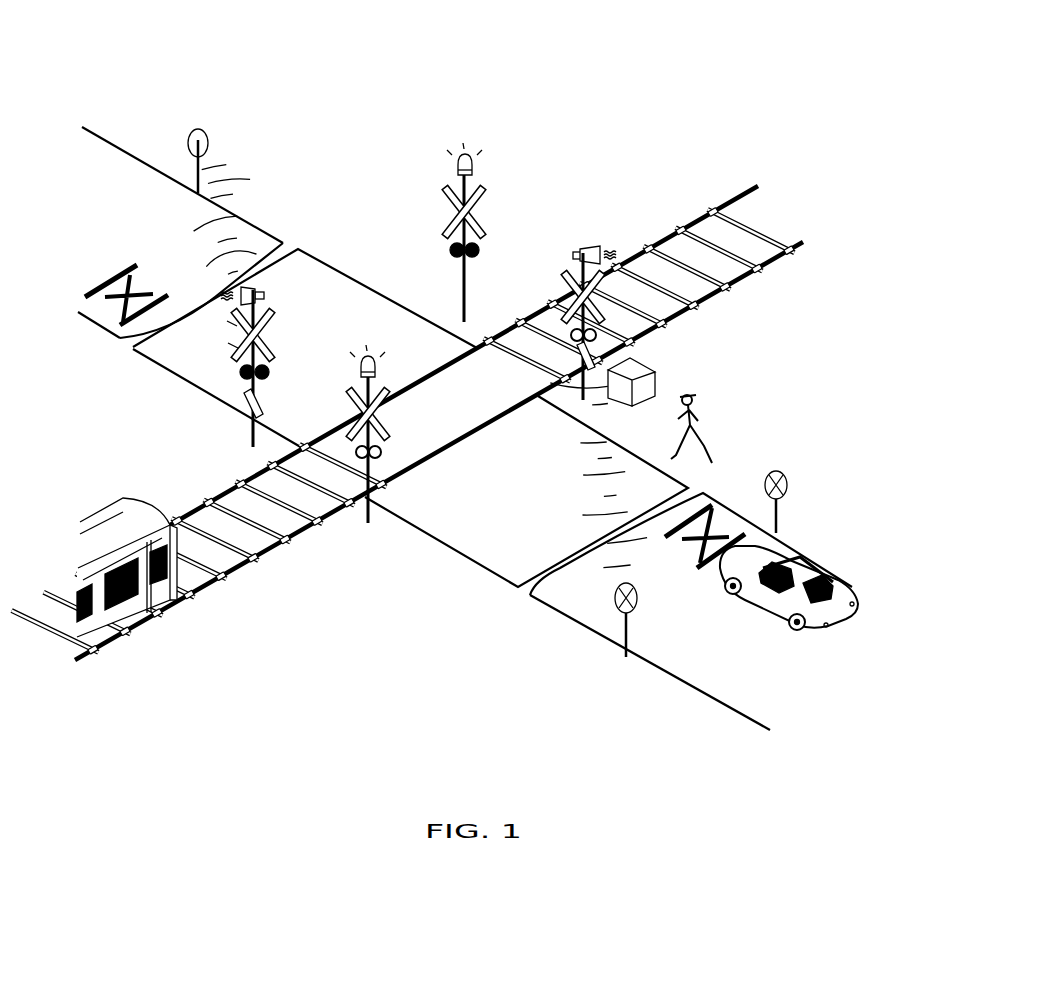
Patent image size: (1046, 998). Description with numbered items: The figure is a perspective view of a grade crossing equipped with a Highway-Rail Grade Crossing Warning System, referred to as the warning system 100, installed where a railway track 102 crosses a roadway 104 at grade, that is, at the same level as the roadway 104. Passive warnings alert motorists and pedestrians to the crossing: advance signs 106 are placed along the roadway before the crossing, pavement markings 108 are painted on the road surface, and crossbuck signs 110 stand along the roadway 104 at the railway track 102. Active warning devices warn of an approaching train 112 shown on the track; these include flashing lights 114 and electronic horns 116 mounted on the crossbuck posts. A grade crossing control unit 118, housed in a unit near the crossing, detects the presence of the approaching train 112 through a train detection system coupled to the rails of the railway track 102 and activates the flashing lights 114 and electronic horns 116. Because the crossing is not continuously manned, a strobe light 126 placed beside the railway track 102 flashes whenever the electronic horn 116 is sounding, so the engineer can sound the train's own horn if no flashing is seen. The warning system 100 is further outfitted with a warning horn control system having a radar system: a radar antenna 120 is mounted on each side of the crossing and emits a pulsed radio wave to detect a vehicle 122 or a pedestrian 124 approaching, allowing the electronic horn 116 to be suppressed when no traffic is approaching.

The warning system 100 is at (519, 47).
The railway track 102 is at (740, 280).
The roadway 104 is at (323, 262).
The advance signs 106 is at (204, 130).
The pavement markings 108 is at (103, 318).
The crossbuck signs 110 is at (448, 188).
The train 112 is at (93, 517).
The flashing lights 114 is at (455, 258).
The electronic horns 116 is at (260, 291).
The grade crossing control unit 118 is at (650, 367).
The radar antenna 120 is at (245, 398).
The vehicle 122 is at (808, 560).
The pedestrian 124 is at (703, 403).
The strobe light 126 is at (468, 150).